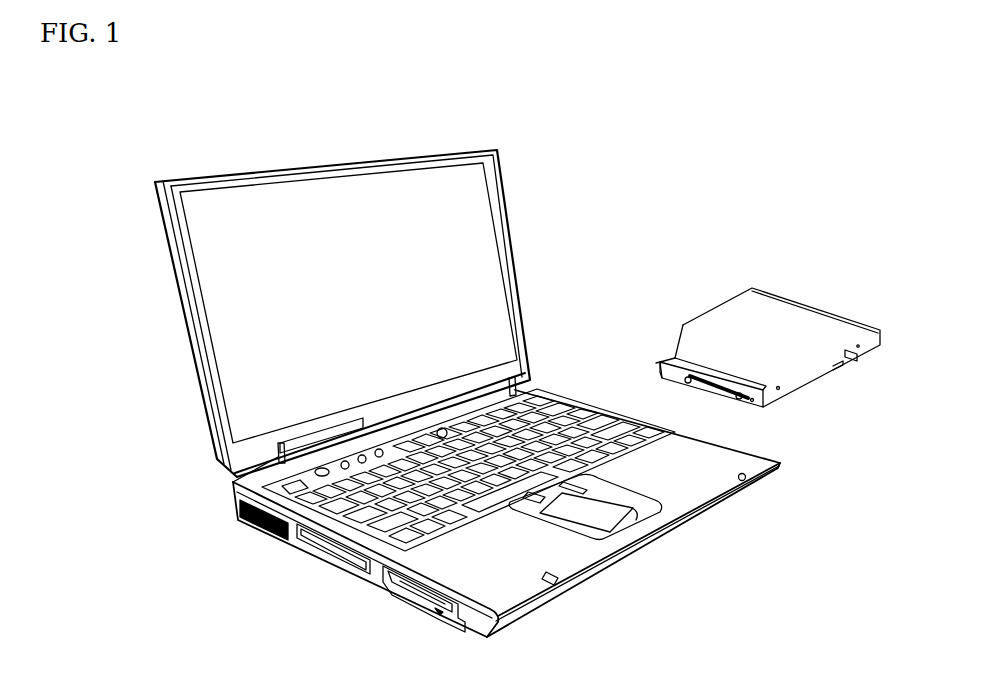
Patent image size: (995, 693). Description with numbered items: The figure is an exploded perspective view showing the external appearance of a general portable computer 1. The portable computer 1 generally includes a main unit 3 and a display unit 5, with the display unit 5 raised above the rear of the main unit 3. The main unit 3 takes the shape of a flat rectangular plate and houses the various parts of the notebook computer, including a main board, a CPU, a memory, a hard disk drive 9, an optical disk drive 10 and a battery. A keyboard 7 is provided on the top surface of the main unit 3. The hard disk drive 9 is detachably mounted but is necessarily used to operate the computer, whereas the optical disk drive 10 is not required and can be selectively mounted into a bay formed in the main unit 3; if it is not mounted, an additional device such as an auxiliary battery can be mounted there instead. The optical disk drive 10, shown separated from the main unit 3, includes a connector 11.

The portable computer 1 is at (160, 339).
The main unit 3 is at (580, 555).
The display unit 5 is at (487, 253).
The keyboard 7 is at (365, 514).
The hard disk drive 9 is at (427, 596).
The optical disk drive 10 is at (822, 288).
The connector 11 is at (712, 397).